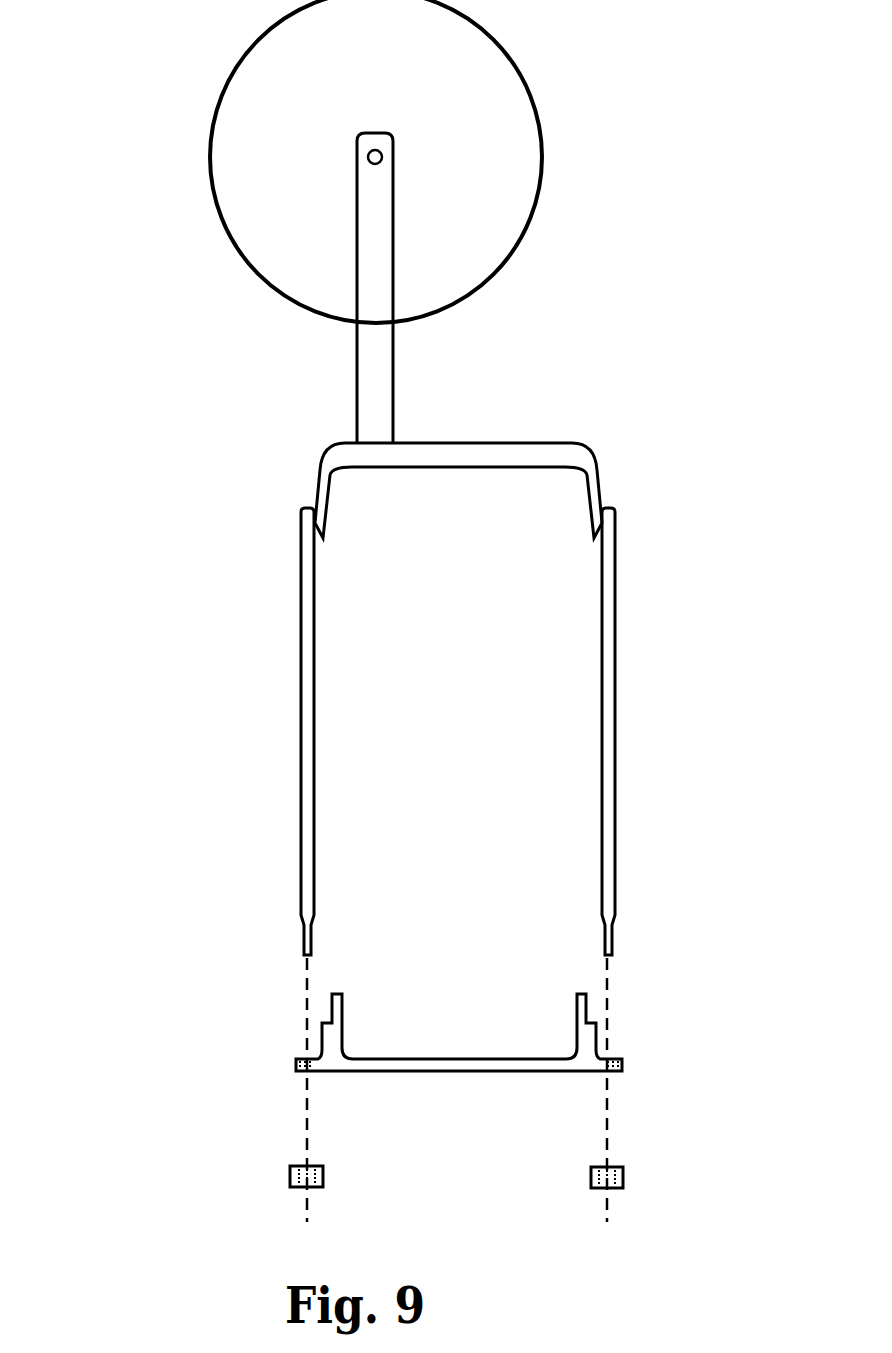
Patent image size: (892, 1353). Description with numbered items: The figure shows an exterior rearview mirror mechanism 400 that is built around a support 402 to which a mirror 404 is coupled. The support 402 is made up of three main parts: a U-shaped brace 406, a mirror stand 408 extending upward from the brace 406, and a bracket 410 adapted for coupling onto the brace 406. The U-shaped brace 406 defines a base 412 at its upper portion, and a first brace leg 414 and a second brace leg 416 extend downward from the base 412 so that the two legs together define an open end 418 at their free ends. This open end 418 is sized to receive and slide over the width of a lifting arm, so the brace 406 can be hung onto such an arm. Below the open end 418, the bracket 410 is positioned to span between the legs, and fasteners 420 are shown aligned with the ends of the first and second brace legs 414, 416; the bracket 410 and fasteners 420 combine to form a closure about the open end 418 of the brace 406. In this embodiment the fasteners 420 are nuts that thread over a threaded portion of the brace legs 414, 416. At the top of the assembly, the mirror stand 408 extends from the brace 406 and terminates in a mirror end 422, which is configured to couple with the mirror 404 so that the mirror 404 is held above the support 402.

The exterior rearview mirror mechanism 400 is at (181, 695).
The support 402 is at (320, 468).
The mirror 404 is at (218, 187).
The U-shaped brace 406 is at (300, 660).
The mirror stand 408 is at (357, 384).
The bracket 410 is at (430, 1060).
The base 412 is at (466, 443).
The first brace leg 414 is at (314, 857).
The second brace leg 416 is at (617, 857).
The open end 418 is at (302, 958).
The fasteners 420 is at (324, 1177).
The mirror end 422 is at (365, 143).